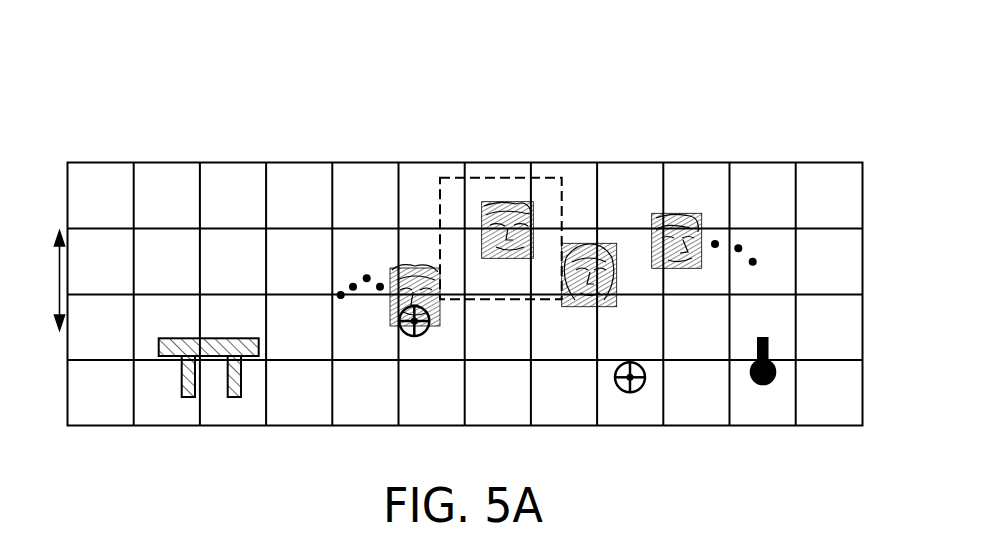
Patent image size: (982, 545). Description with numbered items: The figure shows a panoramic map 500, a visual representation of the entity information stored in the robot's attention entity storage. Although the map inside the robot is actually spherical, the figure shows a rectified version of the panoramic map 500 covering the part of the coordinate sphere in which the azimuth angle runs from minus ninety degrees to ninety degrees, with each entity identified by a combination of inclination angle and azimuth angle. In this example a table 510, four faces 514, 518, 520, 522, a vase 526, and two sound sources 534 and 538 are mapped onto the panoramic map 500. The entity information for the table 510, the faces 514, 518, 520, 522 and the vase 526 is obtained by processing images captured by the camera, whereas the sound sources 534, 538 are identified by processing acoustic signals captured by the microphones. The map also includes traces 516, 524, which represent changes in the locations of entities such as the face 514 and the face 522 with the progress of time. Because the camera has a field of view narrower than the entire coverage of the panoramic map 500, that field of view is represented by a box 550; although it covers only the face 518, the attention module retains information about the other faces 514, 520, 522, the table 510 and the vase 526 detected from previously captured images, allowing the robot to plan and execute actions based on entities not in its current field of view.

The panoramic map 500 is at (522, 55).
The table 510 is at (215, 343).
The face 514 is at (402, 268).
The trace 516 is at (353, 285).
The face 518 is at (510, 201).
The face 520 is at (588, 243).
The face 522 is at (670, 213).
The trace 524 is at (738, 246).
The vase 526 is at (765, 340).
The sound source 534 is at (403, 336).
The sound source 538 is at (636, 391).
The box 550 is at (452, 178).